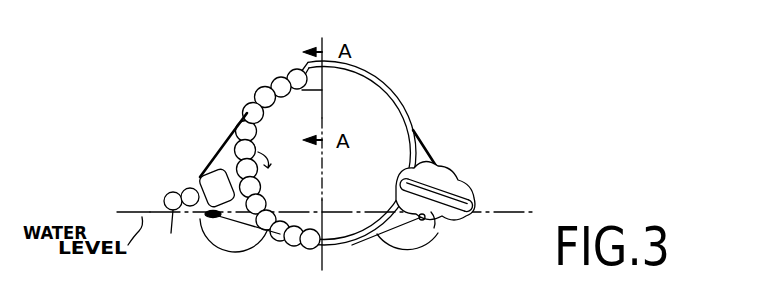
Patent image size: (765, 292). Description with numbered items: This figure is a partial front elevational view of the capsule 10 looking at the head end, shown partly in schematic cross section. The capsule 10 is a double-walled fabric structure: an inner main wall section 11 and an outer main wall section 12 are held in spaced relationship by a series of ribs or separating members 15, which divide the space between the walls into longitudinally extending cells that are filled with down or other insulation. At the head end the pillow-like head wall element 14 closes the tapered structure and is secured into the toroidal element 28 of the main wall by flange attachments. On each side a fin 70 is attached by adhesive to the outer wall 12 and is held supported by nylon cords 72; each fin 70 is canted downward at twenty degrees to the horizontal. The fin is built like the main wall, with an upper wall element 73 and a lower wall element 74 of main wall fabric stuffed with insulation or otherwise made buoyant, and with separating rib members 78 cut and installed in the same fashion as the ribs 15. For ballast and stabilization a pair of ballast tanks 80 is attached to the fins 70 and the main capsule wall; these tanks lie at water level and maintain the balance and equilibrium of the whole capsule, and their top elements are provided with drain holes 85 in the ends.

The capsule 10 is at (414, 111).
The toroidal element 28 is at (380, 78).
The head wall element 14 is at (382, 182).
The ribs or separating members 15 is at (276, 80).
The outer main wall section 12 is at (260, 90).
The inner main wall section 11 is at (263, 118).
The nylon cords 72 is at (216, 156).
The separating rib members 78 is at (205, 176).
The upper wall element 73 is at (166, 191).
The lower wall element 74 is at (174, 221).
The ballast tanks 80 is at (236, 258).
The fins 70 is at (156, 216).
The drain holes 85 is at (438, 224).